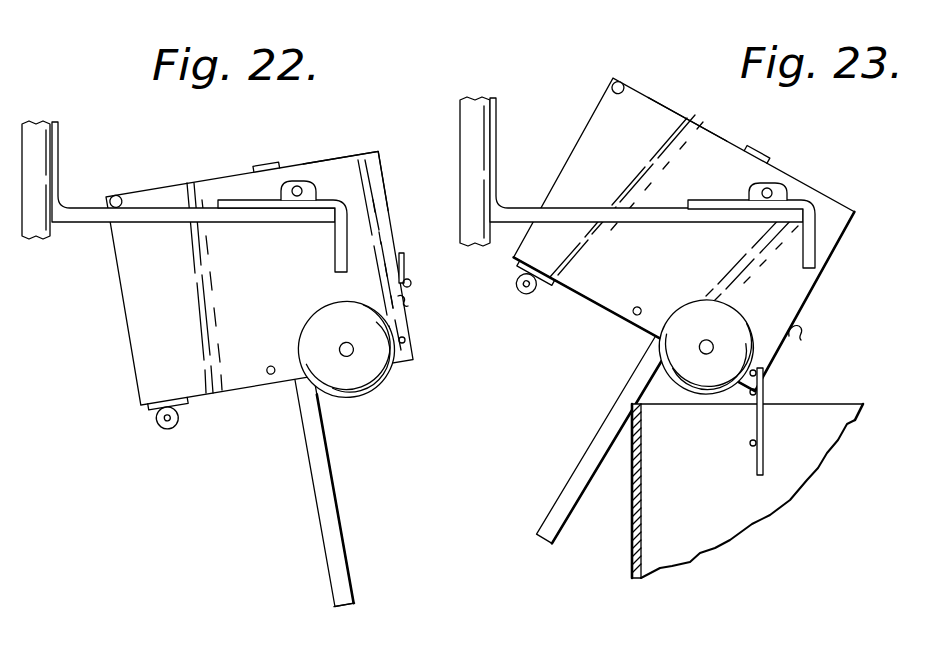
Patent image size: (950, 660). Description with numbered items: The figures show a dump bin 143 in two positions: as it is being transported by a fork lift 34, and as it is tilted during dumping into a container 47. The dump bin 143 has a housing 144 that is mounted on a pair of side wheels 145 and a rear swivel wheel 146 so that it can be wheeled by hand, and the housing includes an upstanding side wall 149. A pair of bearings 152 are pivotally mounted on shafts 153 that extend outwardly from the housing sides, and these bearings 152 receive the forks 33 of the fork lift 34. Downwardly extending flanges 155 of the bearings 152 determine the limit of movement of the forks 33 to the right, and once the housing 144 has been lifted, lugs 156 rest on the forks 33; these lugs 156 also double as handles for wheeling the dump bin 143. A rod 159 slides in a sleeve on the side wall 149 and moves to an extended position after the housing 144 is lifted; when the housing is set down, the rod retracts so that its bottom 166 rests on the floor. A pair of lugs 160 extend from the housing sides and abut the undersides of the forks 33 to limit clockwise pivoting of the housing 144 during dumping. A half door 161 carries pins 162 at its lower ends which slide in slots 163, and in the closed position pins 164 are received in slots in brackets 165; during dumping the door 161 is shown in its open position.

In FIG. 22, the forks 33 is at (138, 222).
In FIG. 23, the forks 33 is at (585, 208).
In FIG. 22, the fork lift 34 is at (24, 132).
In FIG. 23, the fork lift 34 is at (452, 118).
In FIG. 23, the container 47 is at (631, 556).
In FIG. 22, the dump bin 143 is at (112, 339).
In FIG. 23, the dump bin 143 is at (584, 94).
In FIG. 22, the housing 144 is at (378, 150).
In FIG. 23, the housing 144 is at (682, 107).
In FIG. 22, the side wheels 145 is at (357, 396).
In FIG. 23, the side wheels 145 is at (692, 384).
In FIG. 22, the rear swivel wheel 146 is at (160, 424).
In FIG. 23, the rear swivel wheel 146 is at (528, 291).
In FIG. 22, the side wall 149 is at (264, 283).
In FIG. 23, the side wall 149 is at (690, 257).
In FIG. 22, the bearings 152 is at (313, 186).
In FIG. 23, the bearings 152 is at (787, 178).
In FIG. 22, the shafts 153 is at (292, 192).
In FIG. 23, the shafts 153 is at (762, 188).
In FIG. 22, the flanges 155 is at (335, 243).
In FIG. 23, the flanges 155 is at (810, 261).
In FIG. 22, the lugs 156 is at (118, 194).
In FIG. 23, the lugs 156 is at (618, 80).
In FIG. 22, the rod 159 is at (306, 468).
In FIG. 23, the rod 159 is at (564, 471).
In FIG. 22, the lugs 160 is at (270, 377).
In FIG. 23, the lugs 160 is at (657, 286).
In FIG. 22, the half door 161 is at (434, 224).
In FIG. 23, the half door 161 is at (763, 426).
In FIG. 22, the pins 162 is at (405, 340).
In FIG. 23, the pins 162 is at (756, 372).
In FIG. 23, the slots 163 is at (756, 392).
In FIG. 22, the pins 164 is at (411, 283).
In FIG. 23, the pins 164 is at (755, 445).
In FIG. 22, the brackets 165 is at (410, 306).
In FIG. 23, the brackets 165 is at (794, 339).
In FIG. 22, the bottom 166 is at (339, 607).